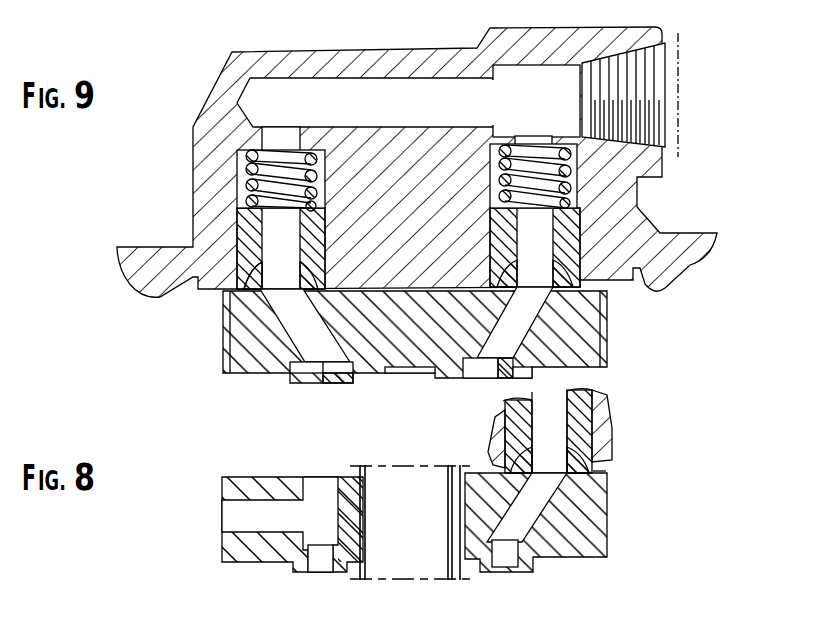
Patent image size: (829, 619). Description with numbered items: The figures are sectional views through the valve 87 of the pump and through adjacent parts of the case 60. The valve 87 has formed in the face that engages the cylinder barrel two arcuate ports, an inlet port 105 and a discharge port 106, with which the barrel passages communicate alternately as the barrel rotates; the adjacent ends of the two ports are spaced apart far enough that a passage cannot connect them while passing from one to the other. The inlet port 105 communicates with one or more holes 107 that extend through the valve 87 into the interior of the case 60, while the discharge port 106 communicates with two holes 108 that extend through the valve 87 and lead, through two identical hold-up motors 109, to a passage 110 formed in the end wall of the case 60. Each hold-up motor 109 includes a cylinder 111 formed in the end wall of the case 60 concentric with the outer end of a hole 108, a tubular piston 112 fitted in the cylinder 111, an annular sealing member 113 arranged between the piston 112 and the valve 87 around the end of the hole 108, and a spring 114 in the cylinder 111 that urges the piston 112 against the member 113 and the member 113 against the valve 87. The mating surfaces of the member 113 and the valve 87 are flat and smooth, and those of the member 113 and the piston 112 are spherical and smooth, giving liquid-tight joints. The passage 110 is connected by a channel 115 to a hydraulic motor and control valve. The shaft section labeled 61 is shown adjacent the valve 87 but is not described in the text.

In FIG. 9, the case 60 is at (680, 275).
In FIG. 8, the case 60 is at (608, 455).
In FIG. 8, the shaft 61 is at (410, 522).
In FIG. 9, the valve 87 is at (593, 325).
In FIG. 8, the valve 87 is at (598, 542).
In FIG. 8, the inlet port 105 is at (323, 572).
In FIG. 9, the discharge port 106 is at (343, 380).
In FIG. 8, the discharge port 106 is at (505, 567).
In FIG. 8, the hole 107 is at (233, 518).
In FIG. 9, the hole 108 is at (497, 340).
In FIG. 8, the hole 108 is at (567, 557).
In FIG. 9, the hold-up motor 109 is at (553, 129).
In FIG. 9, the passage 110 is at (365, 102).
In FIG. 9, the cylinder 111 is at (243, 192).
In FIG. 8, the cylinder 111 is at (585, 420).
In FIG. 9, the tubular piston 112 is at (240, 245).
In FIG. 8, the tubular piston 112 is at (592, 390).
In FIG. 9, the annular sealing member 113 is at (247, 293).
In FIG. 8, the annular sealing member 113 is at (592, 470).
In FIG. 9, the spring 114 is at (238, 168).
In FIG. 9, the channel 115 is at (681, 90).